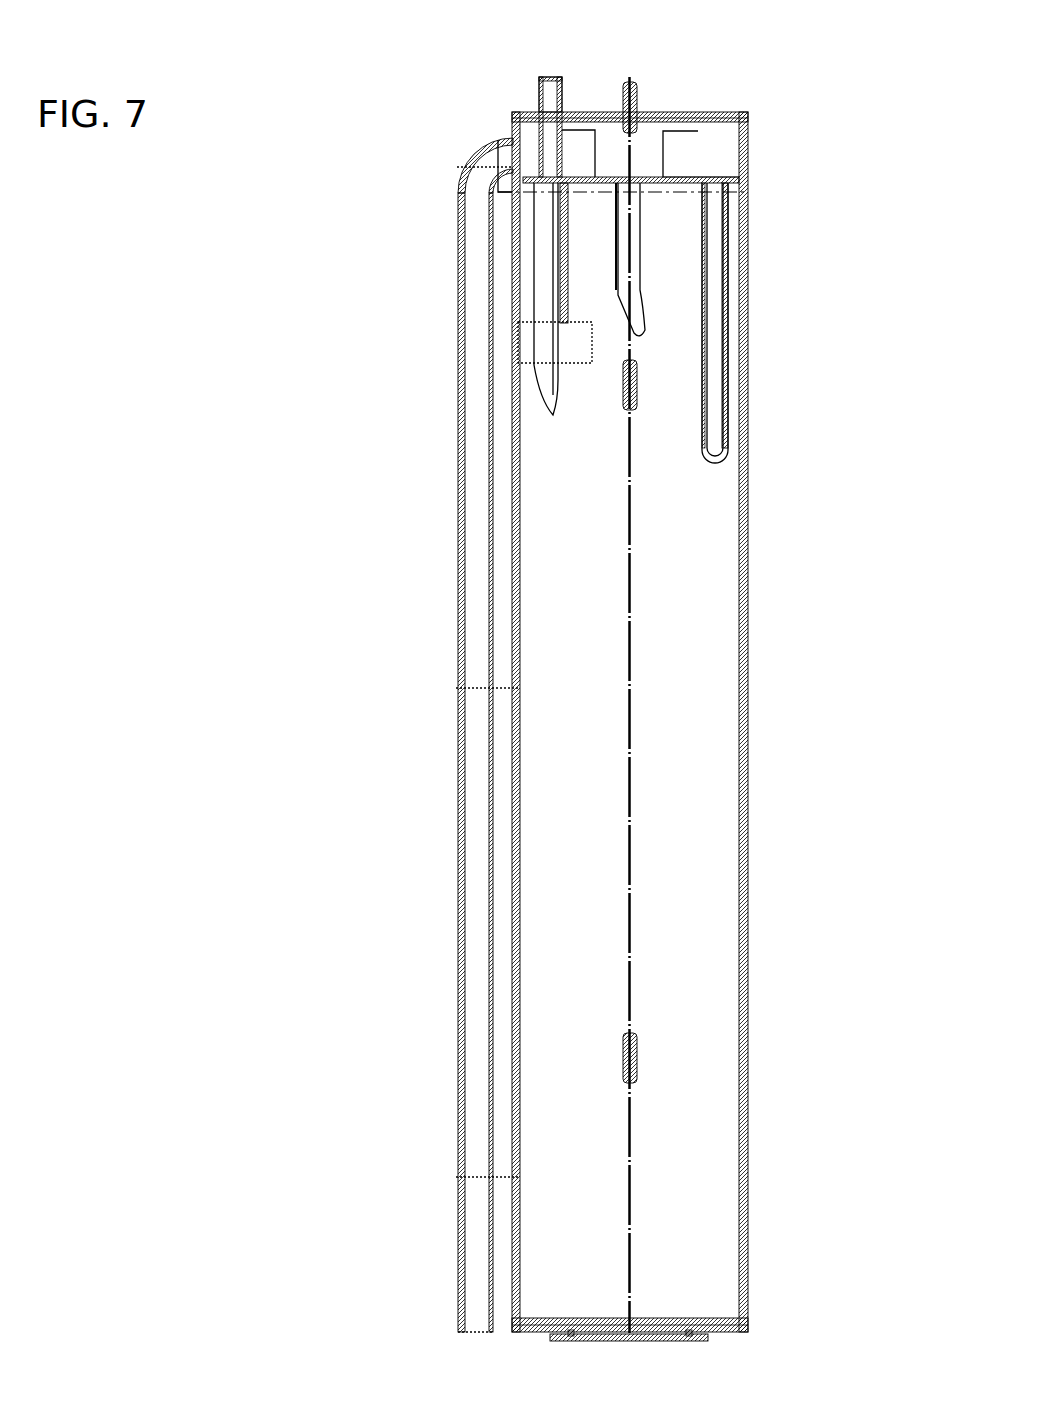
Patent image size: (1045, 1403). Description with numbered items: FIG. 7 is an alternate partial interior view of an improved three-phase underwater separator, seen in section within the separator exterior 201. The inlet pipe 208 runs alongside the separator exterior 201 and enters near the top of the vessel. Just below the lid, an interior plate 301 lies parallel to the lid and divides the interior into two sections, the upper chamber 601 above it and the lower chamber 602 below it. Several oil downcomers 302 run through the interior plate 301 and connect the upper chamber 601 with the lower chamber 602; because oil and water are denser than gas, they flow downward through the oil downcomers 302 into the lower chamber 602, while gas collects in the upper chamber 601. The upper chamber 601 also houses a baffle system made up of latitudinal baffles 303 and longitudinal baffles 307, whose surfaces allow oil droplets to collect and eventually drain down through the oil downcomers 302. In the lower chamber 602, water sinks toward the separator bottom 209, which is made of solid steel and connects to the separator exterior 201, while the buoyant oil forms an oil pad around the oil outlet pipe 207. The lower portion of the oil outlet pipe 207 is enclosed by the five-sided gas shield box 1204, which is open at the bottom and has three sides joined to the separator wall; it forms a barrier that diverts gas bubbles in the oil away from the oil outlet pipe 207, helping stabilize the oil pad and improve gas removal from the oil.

The separator exterior 201 is at (747, 995).
The oil outlet pipe 207 is at (537, 77).
The inlet pipe 208 is at (470, 160).
The separator bottom 209 is at (747, 1325).
The interior plate 301 is at (673, 179).
The oil downcomers 302 is at (543, 350).
The latitudinal baffles 303 is at (597, 175).
The longitudinal baffles 307 is at (573, 128).
The upper chamber 601 is at (723, 163).
The lower chamber 602 is at (688, 825).
The gas shield box 1204 is at (527, 348).